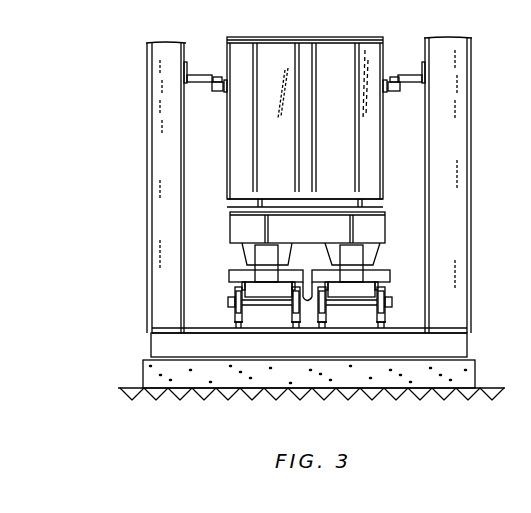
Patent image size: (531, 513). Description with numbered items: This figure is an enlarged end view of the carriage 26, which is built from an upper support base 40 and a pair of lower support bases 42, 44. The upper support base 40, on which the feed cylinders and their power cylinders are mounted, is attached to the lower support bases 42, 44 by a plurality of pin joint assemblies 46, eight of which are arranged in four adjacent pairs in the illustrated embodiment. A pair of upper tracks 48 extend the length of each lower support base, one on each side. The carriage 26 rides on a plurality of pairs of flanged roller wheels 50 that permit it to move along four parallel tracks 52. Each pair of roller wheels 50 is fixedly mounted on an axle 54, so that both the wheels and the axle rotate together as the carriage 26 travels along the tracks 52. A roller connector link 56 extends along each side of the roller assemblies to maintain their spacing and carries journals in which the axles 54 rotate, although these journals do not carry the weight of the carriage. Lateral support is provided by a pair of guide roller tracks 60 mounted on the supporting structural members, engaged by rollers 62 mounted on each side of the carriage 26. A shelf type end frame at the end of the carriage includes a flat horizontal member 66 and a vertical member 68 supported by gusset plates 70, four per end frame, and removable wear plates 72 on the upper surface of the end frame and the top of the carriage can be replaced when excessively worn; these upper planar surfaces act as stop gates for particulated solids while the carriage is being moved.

The carriage 26 is at (223, 203).
The upper support base 40 is at (232, 237).
The lower support base 42 is at (230, 276).
The lower support base 44 is at (390, 276).
The pin joint assembly 46 is at (250, 250).
The upper track 48 is at (240, 286).
The flanged roller wheel 50 is at (236, 314).
The track 52 is at (240, 325).
The axle 54 is at (250, 328).
The roller connector link 56 is at (228, 301).
The guide roller track 60 is at (200, 78).
The roller 62 is at (216, 92).
The flat horizontal member 66 is at (284, 44).
The vertical member 68 is at (376, 154).
The gusset plate 70 is at (255, 147).
The removable wear plate 72 is at (355, 38).